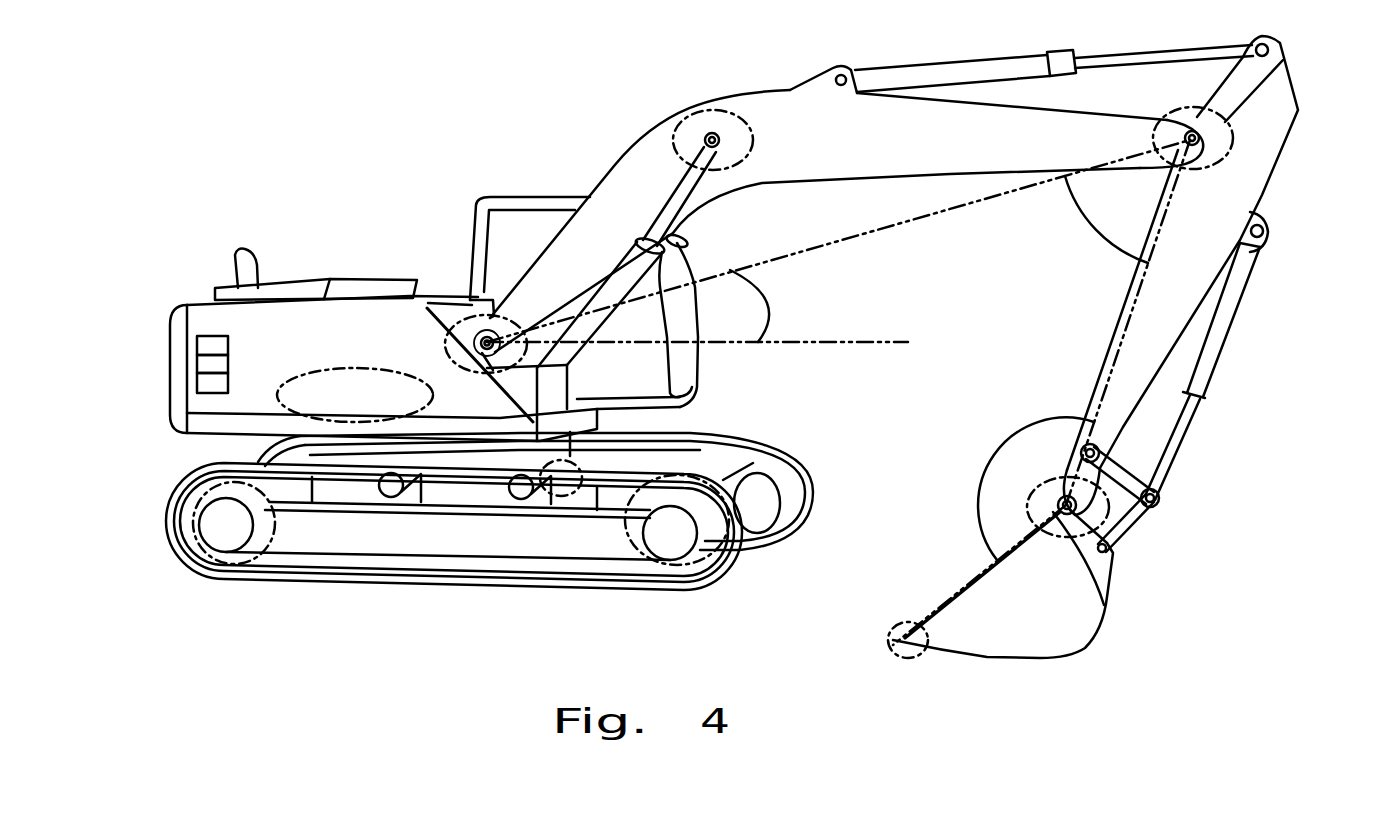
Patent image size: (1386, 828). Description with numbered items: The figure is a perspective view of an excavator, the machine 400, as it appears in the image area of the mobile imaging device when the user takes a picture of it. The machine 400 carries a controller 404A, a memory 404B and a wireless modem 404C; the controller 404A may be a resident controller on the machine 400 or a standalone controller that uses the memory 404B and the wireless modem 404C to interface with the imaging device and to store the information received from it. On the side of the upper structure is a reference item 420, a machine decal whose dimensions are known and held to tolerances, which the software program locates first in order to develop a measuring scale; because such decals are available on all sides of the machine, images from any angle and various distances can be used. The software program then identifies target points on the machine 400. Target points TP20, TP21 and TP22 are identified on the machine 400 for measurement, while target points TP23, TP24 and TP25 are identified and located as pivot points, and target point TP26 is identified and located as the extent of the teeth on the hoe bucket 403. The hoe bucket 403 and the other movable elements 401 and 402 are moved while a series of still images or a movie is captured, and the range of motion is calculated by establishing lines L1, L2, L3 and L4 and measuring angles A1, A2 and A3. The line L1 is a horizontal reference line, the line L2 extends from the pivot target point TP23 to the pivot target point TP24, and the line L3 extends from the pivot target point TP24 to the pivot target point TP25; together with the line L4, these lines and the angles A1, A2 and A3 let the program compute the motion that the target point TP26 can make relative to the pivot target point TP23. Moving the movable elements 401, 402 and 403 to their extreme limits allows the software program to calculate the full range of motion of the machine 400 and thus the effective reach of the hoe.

The machine 400 is at (340, 207).
The movable element 401 is at (760, 91).
The movable element 402 is at (1270, 160).
The hoe bucket 403 is at (1097, 640).
The controller 404A is at (197, 343).
The memory 404B is at (197, 366).
The wireless modem 404C is at (197, 378).
The reference item 420 is at (328, 370).
The target point TP20 is at (556, 498).
The target point TP21 is at (260, 556).
The target point TP22 is at (718, 546).
The pivot target point TP23 is at (476, 318).
The pivot target point TP24 is at (1230, 125).
The pivot target point TP25 is at (1110, 525).
The target point TP26 is at (907, 660).
The horizontal reference line L1 is at (838, 345).
The line L2 is at (880, 231).
The line L3 is at (1120, 345).
The line L4 is at (967, 592).
The angle A1 is at (767, 306).
The angle A2 is at (1083, 237).
The angle A3 is at (993, 455).